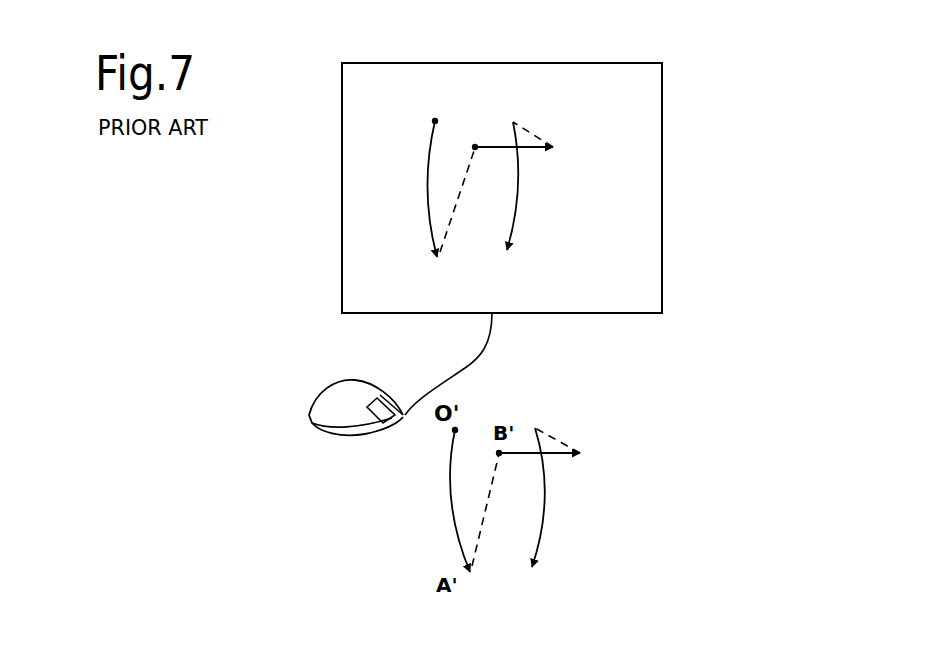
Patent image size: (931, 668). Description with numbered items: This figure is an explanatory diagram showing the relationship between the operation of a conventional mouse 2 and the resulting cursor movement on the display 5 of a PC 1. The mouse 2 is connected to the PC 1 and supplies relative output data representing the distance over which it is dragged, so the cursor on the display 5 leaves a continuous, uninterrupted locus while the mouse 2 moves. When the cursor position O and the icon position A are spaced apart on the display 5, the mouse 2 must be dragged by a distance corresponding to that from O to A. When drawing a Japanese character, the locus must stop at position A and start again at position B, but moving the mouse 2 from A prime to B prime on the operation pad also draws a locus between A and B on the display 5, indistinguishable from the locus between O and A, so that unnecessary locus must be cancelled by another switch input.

The PC 1 is at (558, 164).
The mouse 2 is at (345, 398).
The display 5 is at (632, 152).